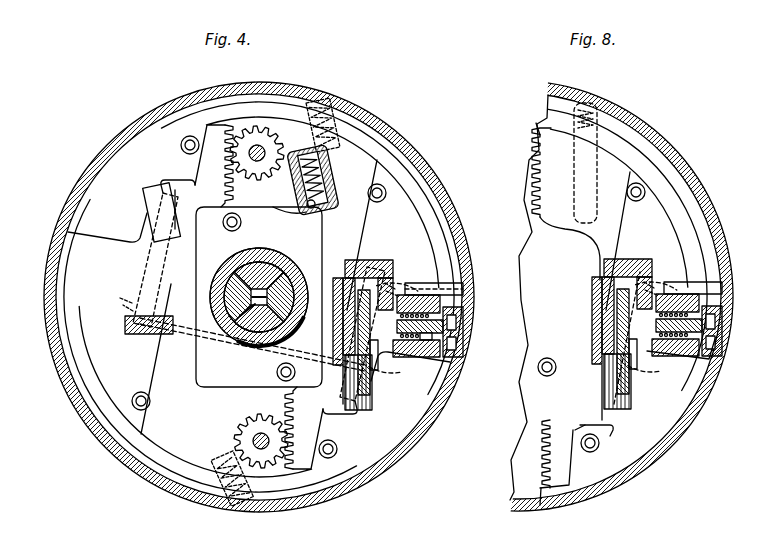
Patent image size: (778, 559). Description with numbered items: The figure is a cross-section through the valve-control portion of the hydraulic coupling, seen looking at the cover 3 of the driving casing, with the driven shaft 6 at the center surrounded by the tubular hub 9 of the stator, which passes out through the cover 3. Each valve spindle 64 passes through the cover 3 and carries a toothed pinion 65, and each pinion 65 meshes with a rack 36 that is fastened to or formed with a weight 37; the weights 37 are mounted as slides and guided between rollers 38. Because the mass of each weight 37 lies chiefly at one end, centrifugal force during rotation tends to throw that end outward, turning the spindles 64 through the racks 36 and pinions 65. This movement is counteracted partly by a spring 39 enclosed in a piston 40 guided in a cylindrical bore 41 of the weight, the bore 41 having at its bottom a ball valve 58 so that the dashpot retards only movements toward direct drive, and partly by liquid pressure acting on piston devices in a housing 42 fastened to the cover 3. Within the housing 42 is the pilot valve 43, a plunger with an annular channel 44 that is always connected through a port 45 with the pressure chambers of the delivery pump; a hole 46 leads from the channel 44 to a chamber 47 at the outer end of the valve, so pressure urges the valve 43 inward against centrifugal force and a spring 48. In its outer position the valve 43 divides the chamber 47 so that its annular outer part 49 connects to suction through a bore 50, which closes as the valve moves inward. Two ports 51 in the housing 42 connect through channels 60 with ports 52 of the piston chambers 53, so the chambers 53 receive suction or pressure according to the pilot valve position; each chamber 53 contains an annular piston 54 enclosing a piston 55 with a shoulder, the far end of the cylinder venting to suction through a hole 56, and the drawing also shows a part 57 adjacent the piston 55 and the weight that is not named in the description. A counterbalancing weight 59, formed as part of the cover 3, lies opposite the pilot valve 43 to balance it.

In FIG. 4, the cover 3 is at (446, 181).
In FIG. 8, the cover 3 is at (700, 212).
In FIG. 4, the driven shaft 6 is at (248, 330).
In FIG. 4, the tubular hub 9 is at (235, 318).
In FIG. 4, the rack 36 is at (228, 124).
In FIG. 8, the rack 36 is at (560, 128).
In FIG. 4, the weight 37 is at (352, 143).
In FIG. 8, the weight 37 is at (614, 308).
In FIG. 4, the roller 38 is at (180, 146).
In FIG. 8, the roller 38 is at (645, 193).
In FIG. 4, the spring 39 is at (342, 120).
In FIG. 4, the piston 40 is at (327, 118).
In FIG. 8, the piston 40 is at (597, 146).
In FIG. 4, the cylindrical bore 41 is at (332, 188).
In FIG. 4, the housing 42 is at (443, 297).
In FIG. 8, the housing 42 is at (711, 287).
In FIG. 4, the pilot valve 43 is at (440, 305).
In FIG. 8, the pilot valve 43 is at (698, 355).
In FIG. 4, the annular channel 44 is at (466, 300).
In FIG. 8, the annular channel 44 is at (679, 354).
In FIG. 4, the port 45 is at (412, 195).
In FIG. 8, the port 45 is at (712, 290).
In FIG. 4, the hole 46 is at (463, 320).
In FIG. 8, the hole 46 is at (729, 327).
In FIG. 4, the chamber 47 is at (456, 325).
In FIG. 8, the chamber 47 is at (730, 327).
In FIG. 4, the spring 48 is at (424, 342).
In FIG. 4, the annular outer part 49 is at (450, 348).
In FIG. 8, the annular outer part 49 is at (698, 351).
In FIG. 4, the bore 50 is at (448, 362).
In FIG. 8, the bore 50 is at (696, 363).
In FIG. 4, the port 51 is at (420, 295).
In FIG. 8, the port 51 is at (660, 334).
In FIG. 4, the port 52 is at (370, 262).
In FIG. 8, the port 52 is at (627, 293).
In FIG. 4, the piston chamber 53 is at (340, 282).
In FIG. 8, the piston chamber 53 is at (592, 311).
In FIG. 4, the annular piston 54 is at (358, 312).
In FIG. 8, the annular piston 54 is at (601, 341).
In FIG. 4, the piston 55 is at (158, 196).
In FIG. 8, the piston 55 is at (622, 346).
In FIG. 4, the hole 56 is at (375, 372).
In FIG. 8, the hole 56 is at (641, 366).
In FIG. 4, the hook 57 is at (168, 178).
In FIG. 8, the hook 57 is at (610, 433).
In FIG. 4, the ball valve 58 is at (300, 210).
In FIG. 4, the counterbalancing weight 59 is at (105, 240).
In FIG. 4, the channel 60 is at (392, 285).
In FIG. 8, the channel 60 is at (661, 336).
In FIG. 4, the valve spindle 64 is at (243, 137).
In FIG. 4, the toothed pinion 65 is at (267, 137).
In FIG. 8, the toothed pinion 65 is at (536, 127).